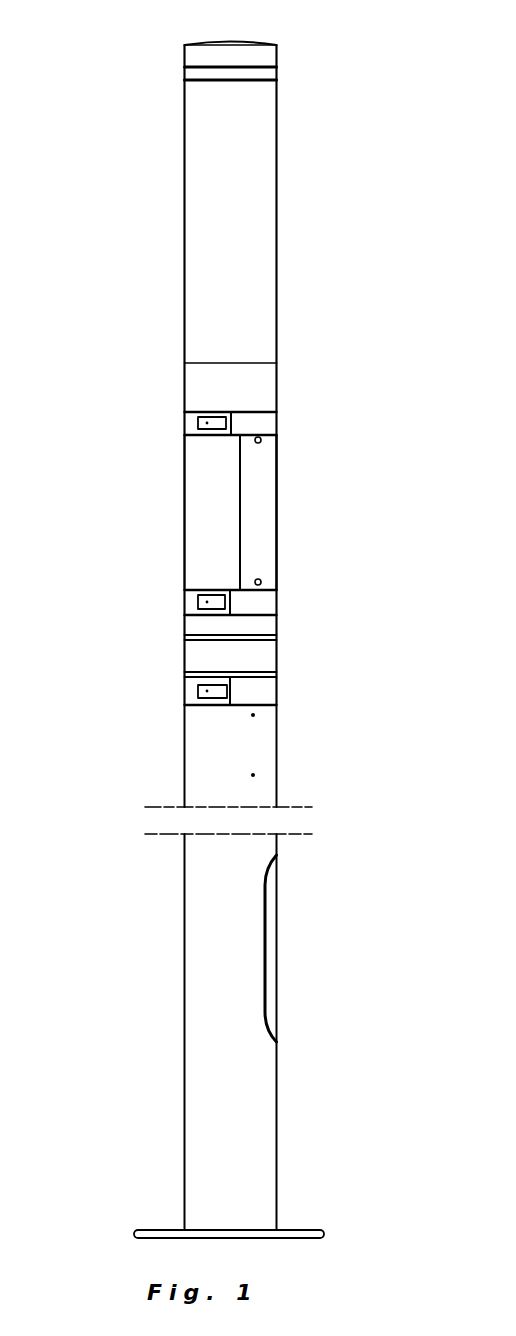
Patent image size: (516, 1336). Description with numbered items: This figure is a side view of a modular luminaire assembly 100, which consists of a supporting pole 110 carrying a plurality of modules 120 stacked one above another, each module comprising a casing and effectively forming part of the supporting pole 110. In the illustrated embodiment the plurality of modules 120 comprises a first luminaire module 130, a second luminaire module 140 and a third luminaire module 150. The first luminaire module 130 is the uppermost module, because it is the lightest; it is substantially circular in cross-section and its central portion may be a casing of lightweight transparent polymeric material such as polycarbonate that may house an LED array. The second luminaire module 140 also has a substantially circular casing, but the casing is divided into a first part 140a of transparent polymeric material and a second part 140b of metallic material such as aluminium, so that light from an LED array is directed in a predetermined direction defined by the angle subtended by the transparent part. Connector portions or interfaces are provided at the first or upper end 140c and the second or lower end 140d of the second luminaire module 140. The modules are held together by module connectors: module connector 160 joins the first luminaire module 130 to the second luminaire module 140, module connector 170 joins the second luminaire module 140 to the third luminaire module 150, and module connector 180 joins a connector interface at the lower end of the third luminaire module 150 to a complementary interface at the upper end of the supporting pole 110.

The modular luminaire assembly 100 is at (345, 104).
The supporting pole 110 is at (328, 700).
The plurality of modules 120 is at (160, 39).
The first luminaire module 130 is at (285, 39).
The second luminaire module 140 is at (227, 512).
The first part 140a is at (253, 552).
The second part 140b is at (208, 493).
The first end 140c is at (279, 440).
The second end 140d is at (279, 583).
The third luminaire module 150 is at (285, 613).
The module connector 160 is at (262, 426).
The module connector 170 is at (255, 603).
The module connector 180 is at (258, 690).